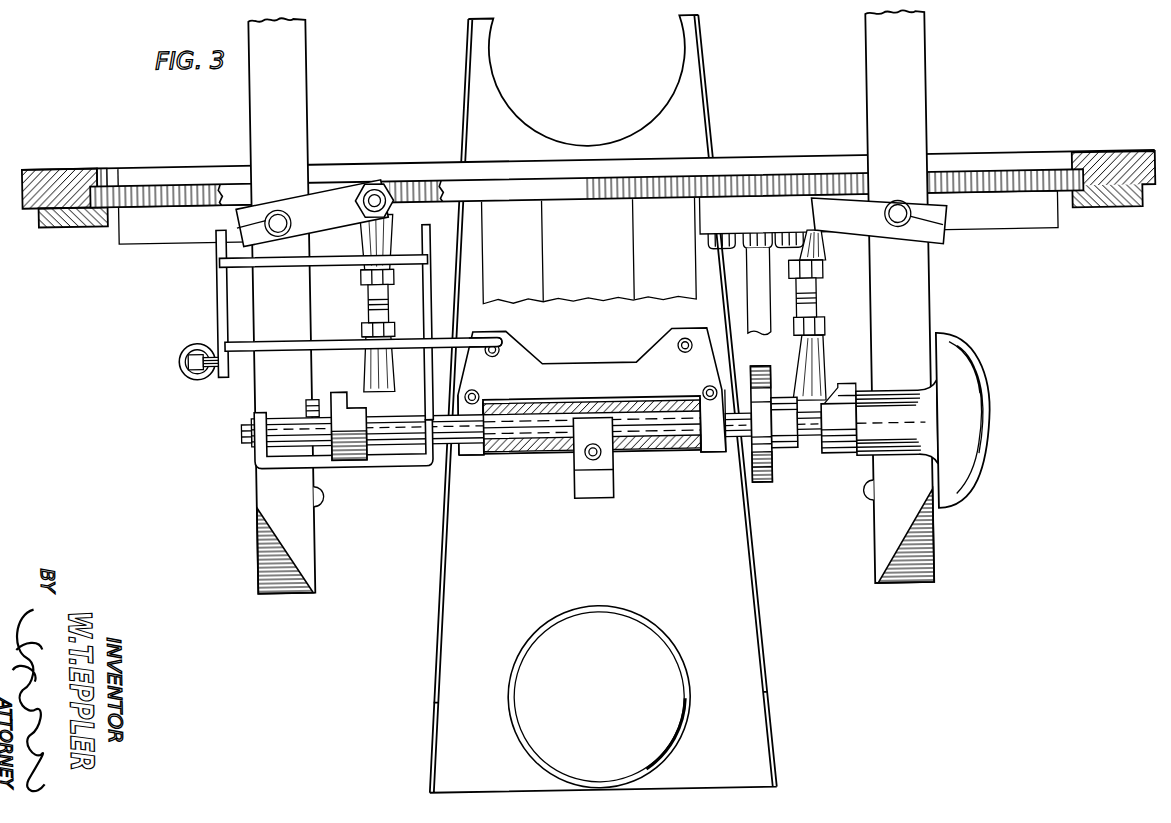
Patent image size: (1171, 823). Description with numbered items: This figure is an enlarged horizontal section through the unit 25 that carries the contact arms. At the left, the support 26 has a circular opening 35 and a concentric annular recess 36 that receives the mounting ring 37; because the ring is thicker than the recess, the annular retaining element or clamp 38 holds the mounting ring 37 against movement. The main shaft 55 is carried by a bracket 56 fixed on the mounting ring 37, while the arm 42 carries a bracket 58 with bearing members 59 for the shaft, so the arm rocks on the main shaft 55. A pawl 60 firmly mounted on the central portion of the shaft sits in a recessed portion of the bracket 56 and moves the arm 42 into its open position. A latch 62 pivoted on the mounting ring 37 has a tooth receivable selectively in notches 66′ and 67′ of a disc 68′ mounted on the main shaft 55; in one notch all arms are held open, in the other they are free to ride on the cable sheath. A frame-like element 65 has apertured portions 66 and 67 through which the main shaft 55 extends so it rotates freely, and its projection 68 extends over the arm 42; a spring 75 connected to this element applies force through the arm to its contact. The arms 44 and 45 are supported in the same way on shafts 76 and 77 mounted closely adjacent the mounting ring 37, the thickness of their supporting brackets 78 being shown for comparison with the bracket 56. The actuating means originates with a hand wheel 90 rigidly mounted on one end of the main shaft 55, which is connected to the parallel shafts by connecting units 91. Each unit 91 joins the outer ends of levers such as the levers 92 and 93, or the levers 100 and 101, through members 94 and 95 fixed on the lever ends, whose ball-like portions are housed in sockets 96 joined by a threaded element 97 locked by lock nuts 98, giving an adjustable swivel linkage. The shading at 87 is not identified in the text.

The unit 25 is at (1036, 129).
The support 26 is at (66, 168).
The circular opening 35 is at (1076, 169).
The annular recess 36 is at (101, 170).
The mounting ring 37 is at (152, 182).
The annular retaining element or clamp 38 is at (65, 218).
The arm 42 is at (476, 80).
The arm 44 is at (300, 76).
The arm 45 is at (918, 80).
The main shaft 55 is at (665, 418).
The bracket 56 is at (600, 298).
The bracket 58 is at (608, 372).
The bearing members 59 is at (472, 453).
The pawl 60 is at (572, 462).
The latch 62 is at (748, 312).
The frame-like element 65 is at (216, 311).
The apertured portion 66 is at (260, 420).
The notch 66′ is at (780, 430).
The apertured portion 67 is at (423, 437).
The notch 67′ is at (772, 440).
The projection 68 is at (466, 338).
The disc 68′ is at (763, 458).
The spring 75 is at (198, 373).
The shaft 76 is at (280, 205).
The shaft 77 is at (900, 232).
The supporting brackets 78 is at (158, 236).
The wedge 87 is at (284, 580).
The hand wheel 90 is at (977, 460).
The connecting unit 91 is at (362, 309).
The lever 92 is at (833, 452).
The lever 93 is at (946, 238).
The member 94 is at (350, 404).
The member 95 is at (379, 185).
The sockets 96 is at (393, 180).
The threaded element 97 is at (390, 300).
The lock nuts 98 is at (364, 273).
The lever 100 is at (343, 458).
The lever 101 is at (350, 182).